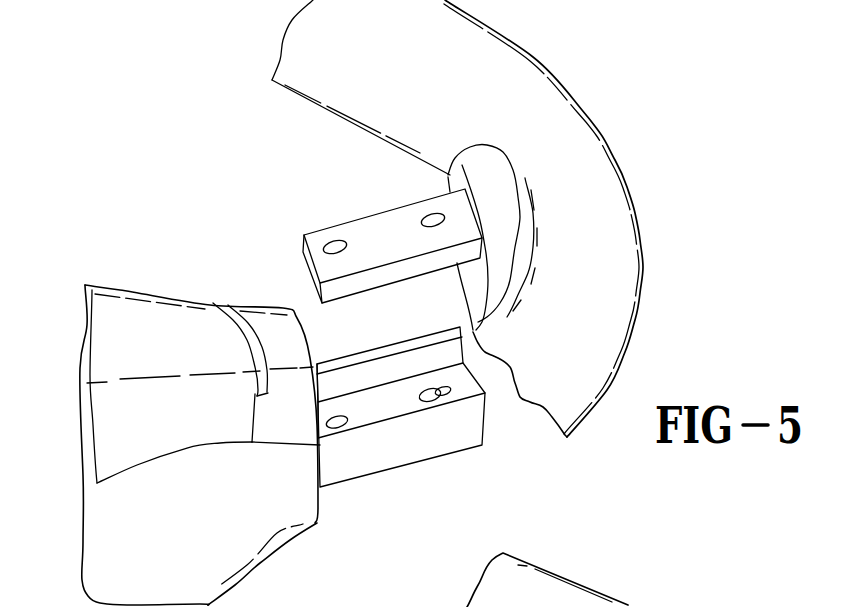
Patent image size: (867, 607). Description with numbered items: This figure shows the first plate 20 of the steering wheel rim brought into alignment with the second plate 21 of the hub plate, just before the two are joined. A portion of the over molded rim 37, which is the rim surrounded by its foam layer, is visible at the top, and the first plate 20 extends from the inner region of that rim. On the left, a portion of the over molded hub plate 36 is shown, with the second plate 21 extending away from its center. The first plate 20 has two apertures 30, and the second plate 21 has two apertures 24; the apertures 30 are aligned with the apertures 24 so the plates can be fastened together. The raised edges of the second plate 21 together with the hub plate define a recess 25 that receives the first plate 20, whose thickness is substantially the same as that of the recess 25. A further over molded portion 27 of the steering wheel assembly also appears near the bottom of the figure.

The first plate 20 is at (362, 226).
The apertures 30 is at (327, 250).
The over molded rim 37 is at (567, 128).
The over molded hub plate 36 is at (243, 538).
The second plate 21 is at (425, 431).
The recess 25 is at (392, 408).
The apertures 24 is at (447, 388).
The cover portion 27 is at (620, 580).